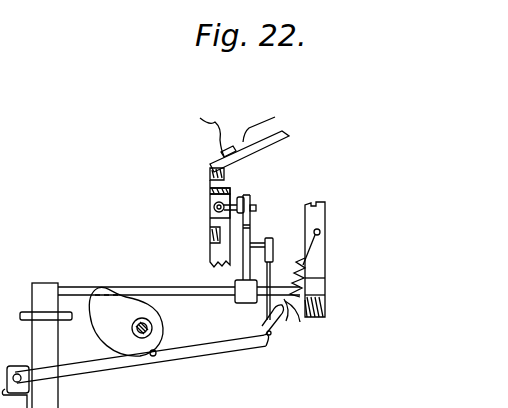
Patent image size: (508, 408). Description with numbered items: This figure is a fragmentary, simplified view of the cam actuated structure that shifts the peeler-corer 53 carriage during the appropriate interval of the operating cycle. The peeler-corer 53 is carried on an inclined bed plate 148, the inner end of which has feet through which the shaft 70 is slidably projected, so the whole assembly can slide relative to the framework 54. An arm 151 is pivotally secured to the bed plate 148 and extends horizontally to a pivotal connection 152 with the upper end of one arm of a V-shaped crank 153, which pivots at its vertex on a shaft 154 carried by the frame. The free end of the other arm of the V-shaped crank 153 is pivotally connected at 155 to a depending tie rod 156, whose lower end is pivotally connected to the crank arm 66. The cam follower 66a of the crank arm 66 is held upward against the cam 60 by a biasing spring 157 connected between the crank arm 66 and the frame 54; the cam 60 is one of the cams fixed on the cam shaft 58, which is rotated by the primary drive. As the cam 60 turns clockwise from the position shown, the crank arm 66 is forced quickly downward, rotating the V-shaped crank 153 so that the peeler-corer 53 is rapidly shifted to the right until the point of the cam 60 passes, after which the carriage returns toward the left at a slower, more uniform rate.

The peeler-corer 53 is at (195, 136).
The framework 54 is at (38, 338).
The cam shaft 58 is at (152, 327).
The cam 60 is at (103, 333).
The crank arm 66 is at (89, 361).
The cam follower 66a is at (153, 356).
The shaft 70 is at (214, 207).
The bed plate 148 is at (268, 151).
The arm 151 is at (246, 192).
The pivotal connection 152 is at (256, 208).
The V-shaped crank 153 is at (250, 228).
The shaft 154 is at (155, 290).
The pivotal connection 155 is at (274, 246).
The tie rod 156 is at (265, 304).
The biasing spring 157 is at (288, 308).